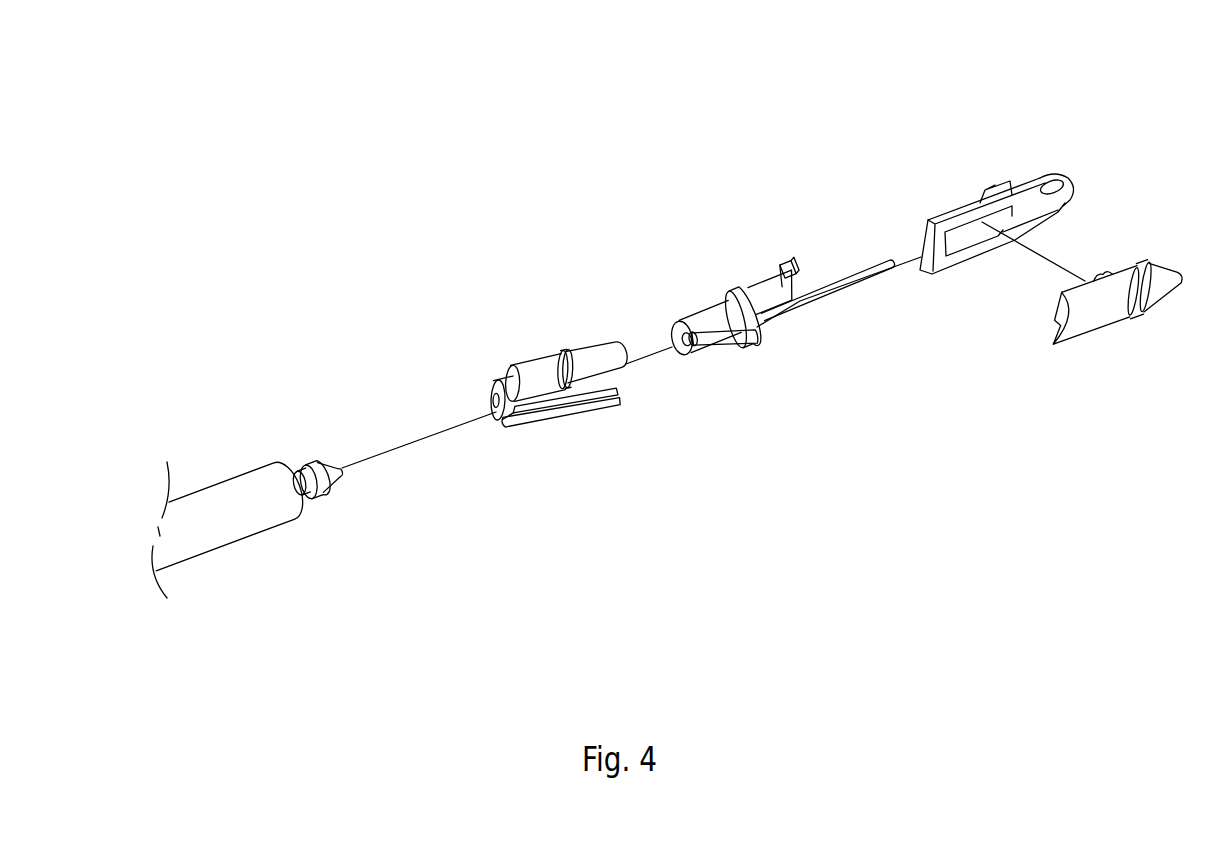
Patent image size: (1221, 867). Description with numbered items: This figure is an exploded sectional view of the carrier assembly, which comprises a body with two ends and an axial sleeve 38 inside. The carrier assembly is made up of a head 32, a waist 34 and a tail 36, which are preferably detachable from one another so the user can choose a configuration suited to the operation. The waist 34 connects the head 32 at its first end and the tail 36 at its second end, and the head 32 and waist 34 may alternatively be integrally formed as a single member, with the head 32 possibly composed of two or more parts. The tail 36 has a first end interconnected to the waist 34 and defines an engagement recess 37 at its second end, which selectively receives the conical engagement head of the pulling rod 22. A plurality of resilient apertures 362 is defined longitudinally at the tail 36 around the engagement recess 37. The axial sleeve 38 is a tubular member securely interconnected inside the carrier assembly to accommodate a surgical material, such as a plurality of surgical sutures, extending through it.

The pulling rod 22 is at (232, 492).
The head 32 is at (983, 160).
The waist 34 is at (724, 310).
The tail 36 is at (595, 358).
The resilient apertures 362 is at (550, 413).
The engagement recess 37 is at (482, 387).
The axial sleeve 38 is at (812, 295).